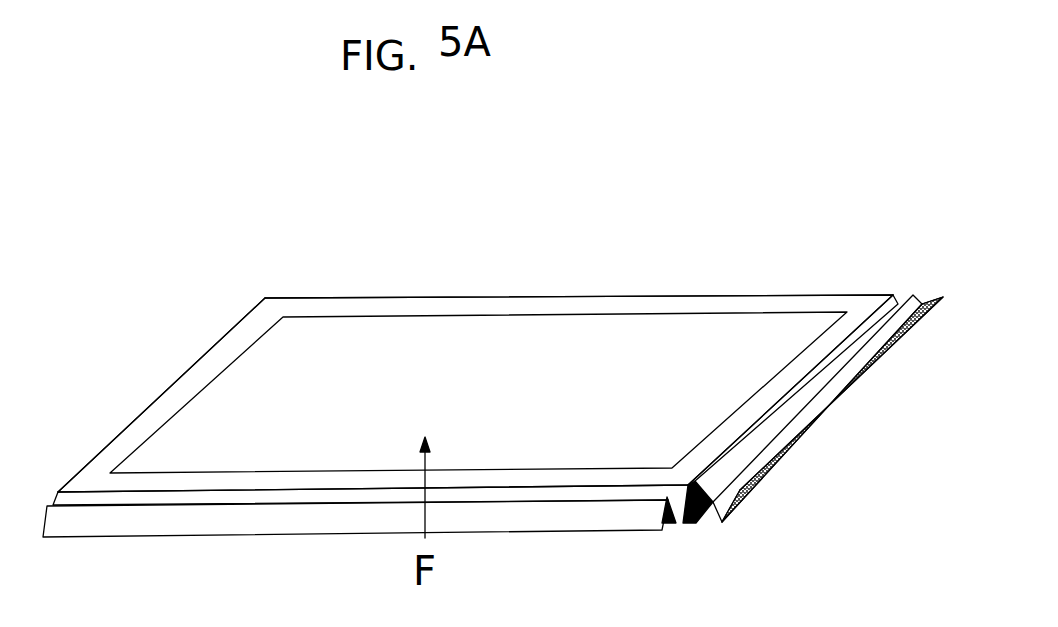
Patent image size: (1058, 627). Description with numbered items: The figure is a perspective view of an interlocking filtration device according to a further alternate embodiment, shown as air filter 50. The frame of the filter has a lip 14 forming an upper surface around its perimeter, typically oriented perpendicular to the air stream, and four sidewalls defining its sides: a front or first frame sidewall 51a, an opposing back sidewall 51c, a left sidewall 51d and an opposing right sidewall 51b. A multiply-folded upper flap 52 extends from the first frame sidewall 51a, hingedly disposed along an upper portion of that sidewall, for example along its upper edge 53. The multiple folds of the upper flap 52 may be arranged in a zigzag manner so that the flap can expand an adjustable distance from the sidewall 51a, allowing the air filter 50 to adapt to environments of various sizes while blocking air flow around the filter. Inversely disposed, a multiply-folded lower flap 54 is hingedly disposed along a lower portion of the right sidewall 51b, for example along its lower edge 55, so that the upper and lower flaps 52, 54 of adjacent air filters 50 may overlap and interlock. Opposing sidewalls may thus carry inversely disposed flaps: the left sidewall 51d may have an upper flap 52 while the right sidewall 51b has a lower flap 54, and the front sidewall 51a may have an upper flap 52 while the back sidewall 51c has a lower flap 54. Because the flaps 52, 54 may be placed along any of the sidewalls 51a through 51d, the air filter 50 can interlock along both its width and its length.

The air filter 50 is at (484, 179).
The lip 14 is at (613, 302).
The first frame sidewall 51a is at (684, 515).
The right sidewall 51b is at (880, 320).
The back sidewall 51c is at (458, 296).
The left sidewall 51d is at (172, 386).
The upper flap 52 is at (88, 525).
The upper edge 53 is at (88, 492).
The lower flap 54 is at (922, 320).
The lower edge 55 is at (698, 512).